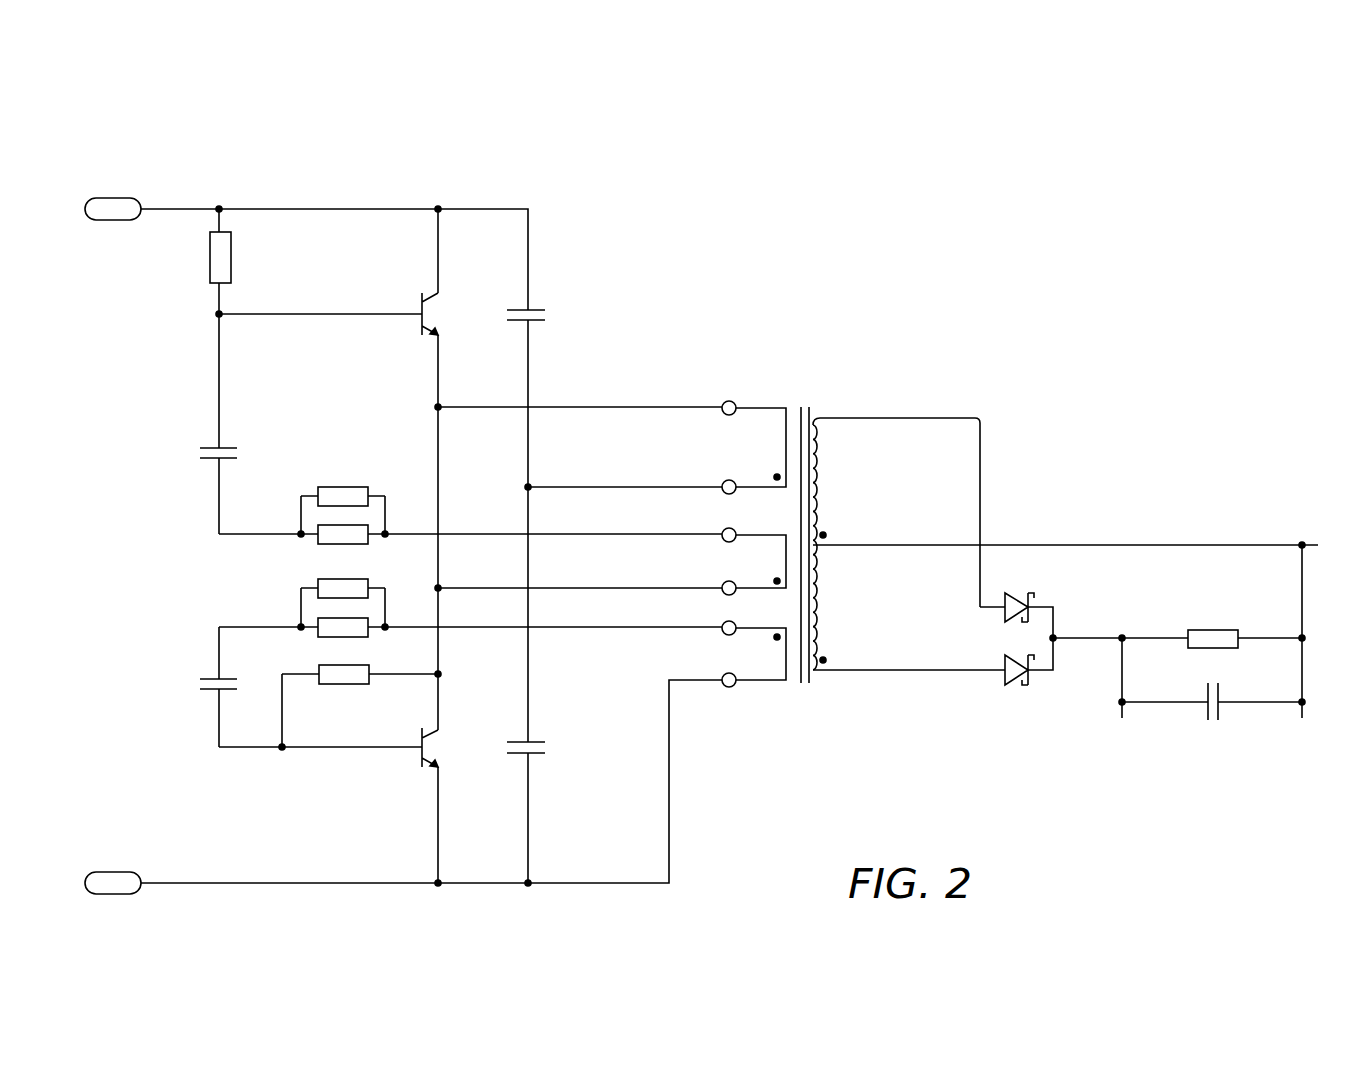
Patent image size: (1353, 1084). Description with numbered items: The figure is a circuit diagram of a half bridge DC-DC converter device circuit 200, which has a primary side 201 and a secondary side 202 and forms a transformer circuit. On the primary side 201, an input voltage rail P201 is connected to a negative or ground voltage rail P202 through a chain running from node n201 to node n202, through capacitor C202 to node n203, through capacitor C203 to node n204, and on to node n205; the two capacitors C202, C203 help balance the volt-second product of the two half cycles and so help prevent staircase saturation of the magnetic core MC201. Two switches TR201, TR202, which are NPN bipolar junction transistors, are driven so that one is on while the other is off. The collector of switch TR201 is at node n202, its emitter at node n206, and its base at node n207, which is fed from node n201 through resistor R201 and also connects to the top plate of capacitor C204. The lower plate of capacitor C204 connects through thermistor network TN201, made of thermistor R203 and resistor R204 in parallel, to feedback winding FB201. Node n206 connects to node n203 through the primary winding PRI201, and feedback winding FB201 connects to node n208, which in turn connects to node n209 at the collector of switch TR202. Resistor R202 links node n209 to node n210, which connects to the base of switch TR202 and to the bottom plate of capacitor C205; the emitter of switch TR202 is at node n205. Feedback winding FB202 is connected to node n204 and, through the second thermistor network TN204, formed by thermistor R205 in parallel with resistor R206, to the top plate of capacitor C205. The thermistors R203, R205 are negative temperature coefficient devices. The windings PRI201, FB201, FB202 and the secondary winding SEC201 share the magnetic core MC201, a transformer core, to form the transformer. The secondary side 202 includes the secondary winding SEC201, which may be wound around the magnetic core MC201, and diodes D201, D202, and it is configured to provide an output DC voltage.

The half bridge DC-DC converter device circuit 200 is at (163, 150).
The primary side 201 is at (330, 208).
The secondary side 202 is at (955, 418).
The input voltage rail P201 is at (113, 198).
The negative or ground voltage rail P202 is at (113, 872).
The node n201 is at (219, 208).
The node n202 is at (438, 208).
The node n203 is at (527, 486).
The node n204 is at (529, 883).
The node n205 is at (437, 883).
The node n206 is at (436, 407).
The node n207 is at (218, 314).
The node n208 is at (438, 587).
The node n209 is at (439, 674).
The node n210 is at (282, 750).
The resistor R201 is at (210, 260).
The resistor R202 is at (344, 684).
The thermistor R203 is at (345, 487).
The resistor R204 is at (330, 545).
The thermistor R205 is at (355, 579).
The resistor R206 is at (330, 637).
The capacitor C202 is at (548, 316).
The capacitor C203 is at (548, 748).
The capacitor C204 is at (198, 453).
The capacitor C205 is at (198, 684).
The switch TR201 is at (420, 304).
The switch TR202 is at (420, 756).
The thermistor network TN201 is at (301, 510).
The terminal node TN204 is at (300, 610).
The primary winding PRI201 is at (768, 406).
The feedback winding FB201 is at (768, 532).
The feedback winding FB202 is at (765, 626).
The magnetic core MC201 is at (806, 416).
The secondary winding SEC201 is at (821, 470).
The diode D201 is at (1004, 612).
The diode D202 is at (1012, 688).